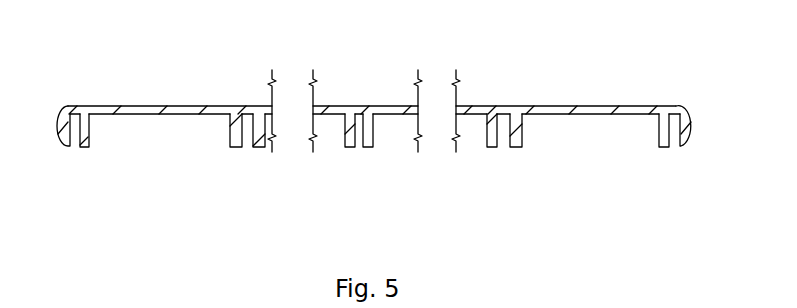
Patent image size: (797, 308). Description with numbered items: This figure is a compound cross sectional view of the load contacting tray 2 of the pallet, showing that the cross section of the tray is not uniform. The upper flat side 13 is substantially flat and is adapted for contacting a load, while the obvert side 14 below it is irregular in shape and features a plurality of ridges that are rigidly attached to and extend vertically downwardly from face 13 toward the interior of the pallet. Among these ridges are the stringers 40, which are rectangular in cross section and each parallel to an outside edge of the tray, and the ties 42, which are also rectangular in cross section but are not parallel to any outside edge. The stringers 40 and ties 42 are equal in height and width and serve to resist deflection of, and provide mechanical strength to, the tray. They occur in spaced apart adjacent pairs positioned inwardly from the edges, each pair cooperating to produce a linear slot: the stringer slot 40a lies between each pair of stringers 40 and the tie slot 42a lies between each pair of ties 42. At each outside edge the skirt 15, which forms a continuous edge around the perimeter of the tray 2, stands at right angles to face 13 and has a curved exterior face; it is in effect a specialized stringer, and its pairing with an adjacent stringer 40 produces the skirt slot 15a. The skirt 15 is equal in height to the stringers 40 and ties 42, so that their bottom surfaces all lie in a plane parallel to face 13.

The load contacting tray 2 is at (386, 137).
The upper flat side 13 is at (187, 107).
The obvert side 14 is at (602, 182).
The skirt 15 is at (57, 131).
The skirt slot 15a is at (72, 107).
The stringer 40 is at (92, 148).
The stringer slot 40a is at (248, 118).
The tie 42 is at (345, 145).
The tie slot 42a is at (360, 130).